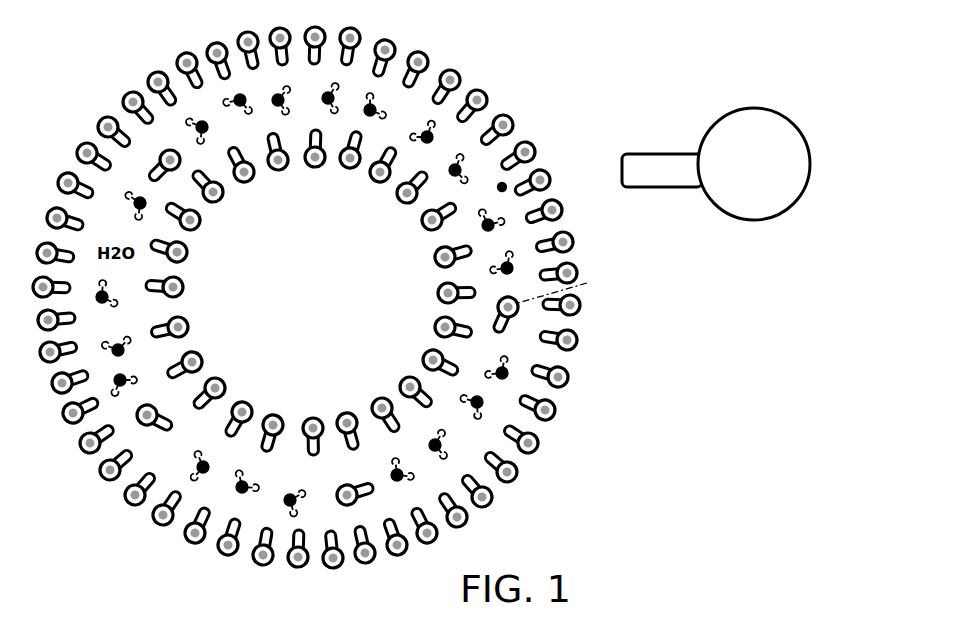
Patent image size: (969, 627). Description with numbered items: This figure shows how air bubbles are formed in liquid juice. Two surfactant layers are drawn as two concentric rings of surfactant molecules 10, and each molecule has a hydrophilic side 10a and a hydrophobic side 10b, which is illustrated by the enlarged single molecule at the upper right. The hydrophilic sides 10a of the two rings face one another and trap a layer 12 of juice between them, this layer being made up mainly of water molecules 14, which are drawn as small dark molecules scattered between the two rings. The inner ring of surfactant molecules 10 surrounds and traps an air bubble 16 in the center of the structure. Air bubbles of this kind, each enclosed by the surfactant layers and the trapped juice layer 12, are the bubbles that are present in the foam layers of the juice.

The surfactant molecules 10 is at (580, 343).
The hydrophilic side 10a is at (672, 153).
The hydrophobic side 10b is at (727, 111).
The layer of juice 12 is at (504, 185).
The water molecules 14 is at (434, 128).
The air bubble 16 is at (301, 288).